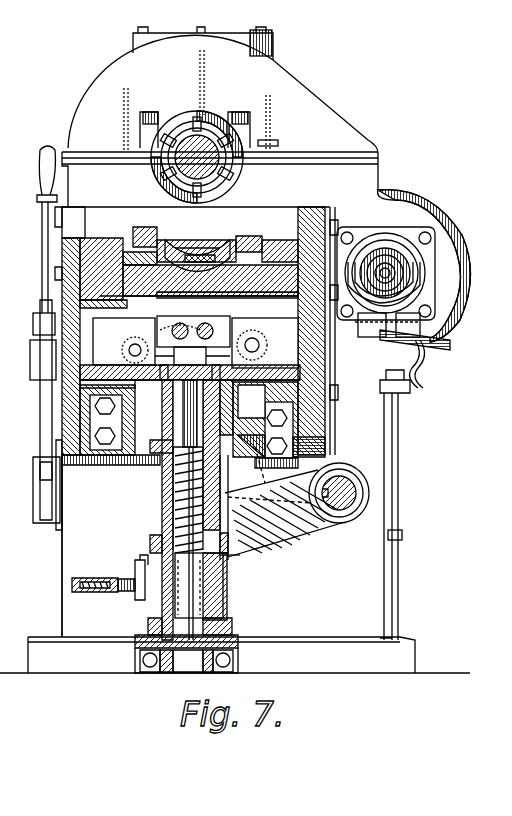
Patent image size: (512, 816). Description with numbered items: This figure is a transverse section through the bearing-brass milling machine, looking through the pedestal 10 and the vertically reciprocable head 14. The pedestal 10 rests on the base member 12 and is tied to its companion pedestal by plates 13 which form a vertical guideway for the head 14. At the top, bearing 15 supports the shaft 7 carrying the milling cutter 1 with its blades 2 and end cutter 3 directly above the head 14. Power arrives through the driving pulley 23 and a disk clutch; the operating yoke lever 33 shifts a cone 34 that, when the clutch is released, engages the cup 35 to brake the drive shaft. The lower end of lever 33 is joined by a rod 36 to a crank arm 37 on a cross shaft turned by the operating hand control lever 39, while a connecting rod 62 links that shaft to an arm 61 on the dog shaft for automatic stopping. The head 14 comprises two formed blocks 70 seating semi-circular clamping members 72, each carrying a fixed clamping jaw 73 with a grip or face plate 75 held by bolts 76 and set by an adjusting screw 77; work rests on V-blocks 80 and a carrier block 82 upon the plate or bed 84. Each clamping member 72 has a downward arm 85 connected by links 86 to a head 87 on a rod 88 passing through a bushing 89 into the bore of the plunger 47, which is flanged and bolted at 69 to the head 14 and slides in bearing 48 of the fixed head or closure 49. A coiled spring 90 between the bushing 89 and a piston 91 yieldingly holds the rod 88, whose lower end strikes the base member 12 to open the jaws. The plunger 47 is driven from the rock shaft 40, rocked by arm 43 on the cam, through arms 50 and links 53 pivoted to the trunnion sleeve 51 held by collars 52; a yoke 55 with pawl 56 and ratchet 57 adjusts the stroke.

The milling cutter 1 is at (202, 150).
The blades 2 is at (188, 135).
The end cutter 3 is at (213, 152).
The bearing 15 is at (250, 140).
The shaft 7 is at (258, 148).
The driving pulley 23 is at (417, 195).
The cup 35 is at (385, 235).
The cone 34 is at (400, 262).
The operating yoke lever 33 is at (410, 272).
The crank arm 37 is at (418, 365).
The rod 36 is at (405, 400).
The formed blocks 70 is at (93, 250).
The fixed clamping jaw 73 is at (147, 225).
The bolts 76 is at (128, 250).
The grip or face plate 75 is at (168, 238).
The carrier block 82 is at (190, 240).
The adjusting screw 77 is at (197, 237).
The V-blocks 80 is at (220, 260).
The clamping members 72 is at (288, 235).
The plate or bed 84 is at (193, 324).
The head 87 is at (190, 354).
The links 86 is at (190, 365).
The arm 85 is at (112, 320).
The flange bolting 69 is at (330, 372).
The vertically reciprocable head 14 is at (322, 375).
The plates 13 is at (75, 412).
The fixed head or closure 49 is at (100, 385).
The connecting rod 62 is at (42, 437).
The operating hand control lever 39 is at (42, 258).
The arm 61 is at (35, 500).
The bearing 48 is at (140, 460).
The plunger 47 is at (162, 480).
The rod 88 is at (180, 500).
The coiled spring 90 is at (190, 512).
The collars 52 is at (150, 538).
The ratchet 57 is at (135, 572).
The yoke 55 is at (115, 575).
The pawl 56 is at (120, 592).
The bushing 89 is at (238, 432).
The arm 43 is at (262, 490).
The arms 50 is at (290, 530).
The rock shaft 40 is at (347, 500).
The piston 91 is at (232, 555).
The links 53 is at (222, 575).
The trunnion sleeve 51 is at (225, 595).
The pedestal 10 is at (384, 605).
The base member 12 is at (170, 672).